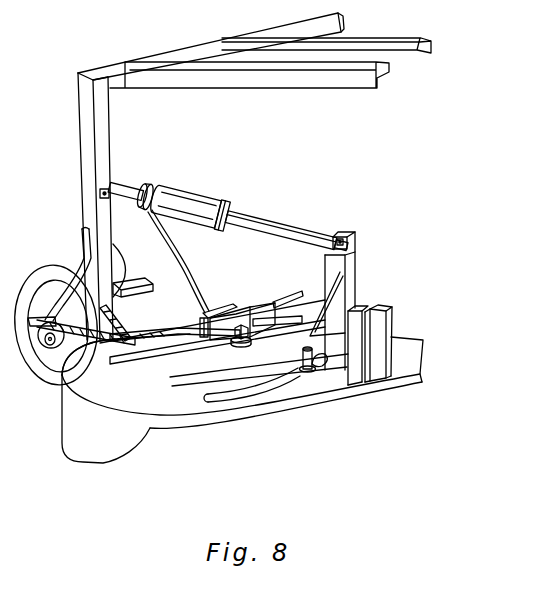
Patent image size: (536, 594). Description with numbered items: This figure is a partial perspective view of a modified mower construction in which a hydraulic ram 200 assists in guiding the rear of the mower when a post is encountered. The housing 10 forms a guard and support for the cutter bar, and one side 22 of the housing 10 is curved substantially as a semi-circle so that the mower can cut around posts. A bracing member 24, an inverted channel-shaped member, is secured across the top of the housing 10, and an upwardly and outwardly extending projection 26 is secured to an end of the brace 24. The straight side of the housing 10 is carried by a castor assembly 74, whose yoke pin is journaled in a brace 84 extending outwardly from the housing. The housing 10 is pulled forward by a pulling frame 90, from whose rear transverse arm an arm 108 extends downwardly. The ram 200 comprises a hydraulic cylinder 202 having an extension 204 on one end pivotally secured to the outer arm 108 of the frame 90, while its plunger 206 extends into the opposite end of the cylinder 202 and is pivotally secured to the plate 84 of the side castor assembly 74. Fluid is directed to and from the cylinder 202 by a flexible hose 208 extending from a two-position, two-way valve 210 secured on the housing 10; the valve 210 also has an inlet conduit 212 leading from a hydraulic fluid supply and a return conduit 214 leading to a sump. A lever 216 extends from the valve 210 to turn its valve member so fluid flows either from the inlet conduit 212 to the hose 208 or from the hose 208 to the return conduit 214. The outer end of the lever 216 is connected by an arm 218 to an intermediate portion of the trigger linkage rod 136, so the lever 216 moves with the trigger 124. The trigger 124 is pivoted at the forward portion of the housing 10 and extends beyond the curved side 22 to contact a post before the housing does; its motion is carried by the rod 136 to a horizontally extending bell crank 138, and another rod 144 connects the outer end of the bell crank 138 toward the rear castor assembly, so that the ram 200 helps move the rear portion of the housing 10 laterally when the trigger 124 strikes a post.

The housing 10 is at (58, 381).
The curved side 22 is at (90, 438).
The bracing member 24 is at (262, 362).
The projection 26 is at (392, 320).
The castor assembly 74 is at (358, 272).
The brace 84 is at (353, 250).
The pulling frame 90 is at (160, 45).
The arm 108 is at (86, 110).
The trigger member 124 is at (229, 392).
The rod 136 is at (222, 352).
The bell crank 138 is at (133, 348).
The rod 144 is at (82, 342).
The hydraulic ram 200 is at (230, 199).
The hydraulic cylinder 202 is at (170, 191).
The extension 204 is at (120, 195).
The plunger 206 is at (272, 228).
The flexible hose 208 is at (184, 259).
The valve 210 is at (229, 300).
The inlet conduit 212 is at (276, 327).
The return conduit 214 is at (286, 298).
The lever 216 is at (222, 308).
The arm 218 is at (200, 315).